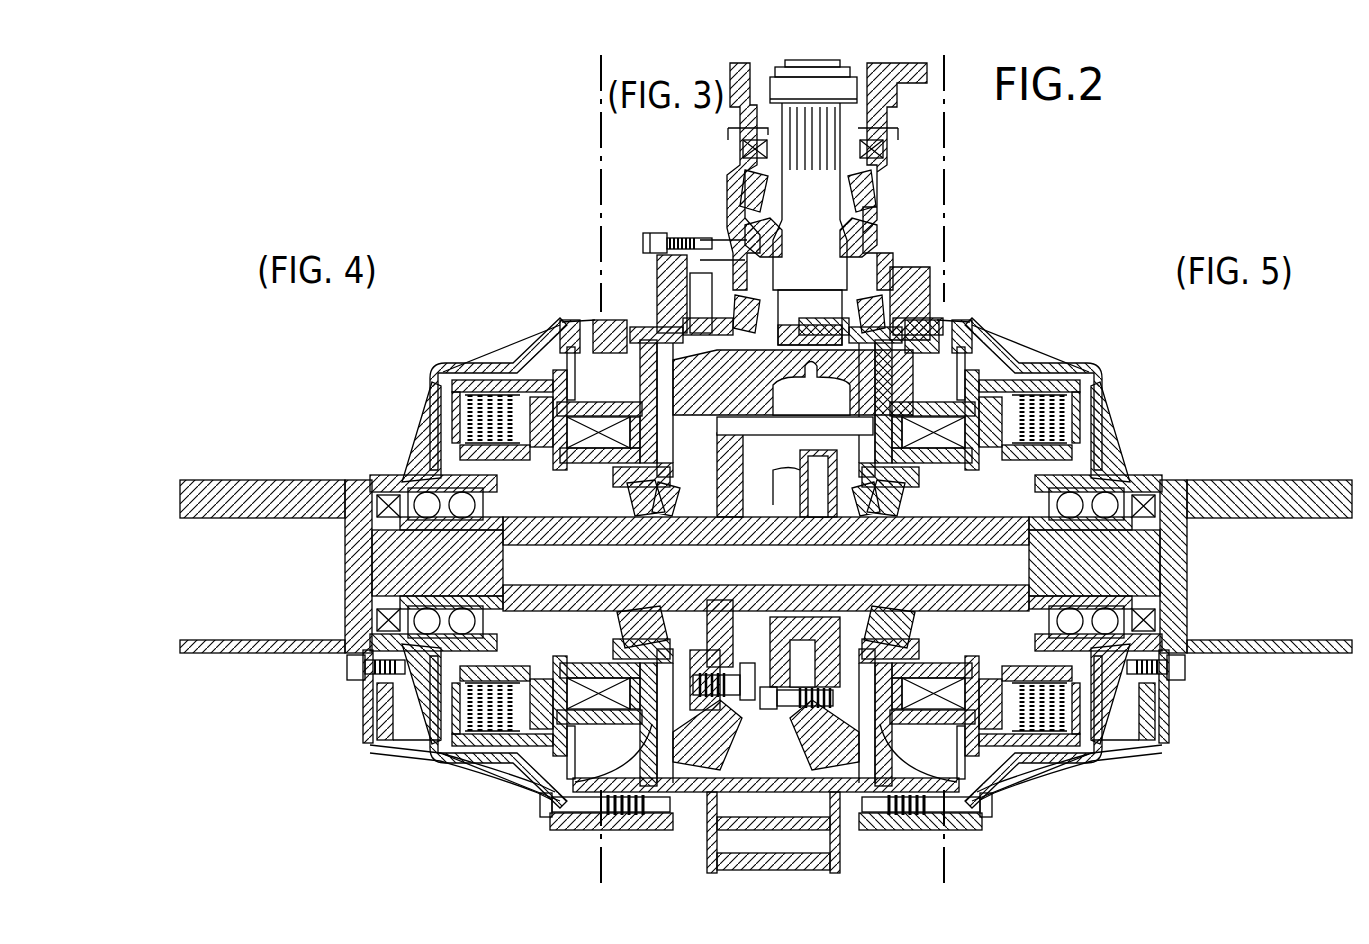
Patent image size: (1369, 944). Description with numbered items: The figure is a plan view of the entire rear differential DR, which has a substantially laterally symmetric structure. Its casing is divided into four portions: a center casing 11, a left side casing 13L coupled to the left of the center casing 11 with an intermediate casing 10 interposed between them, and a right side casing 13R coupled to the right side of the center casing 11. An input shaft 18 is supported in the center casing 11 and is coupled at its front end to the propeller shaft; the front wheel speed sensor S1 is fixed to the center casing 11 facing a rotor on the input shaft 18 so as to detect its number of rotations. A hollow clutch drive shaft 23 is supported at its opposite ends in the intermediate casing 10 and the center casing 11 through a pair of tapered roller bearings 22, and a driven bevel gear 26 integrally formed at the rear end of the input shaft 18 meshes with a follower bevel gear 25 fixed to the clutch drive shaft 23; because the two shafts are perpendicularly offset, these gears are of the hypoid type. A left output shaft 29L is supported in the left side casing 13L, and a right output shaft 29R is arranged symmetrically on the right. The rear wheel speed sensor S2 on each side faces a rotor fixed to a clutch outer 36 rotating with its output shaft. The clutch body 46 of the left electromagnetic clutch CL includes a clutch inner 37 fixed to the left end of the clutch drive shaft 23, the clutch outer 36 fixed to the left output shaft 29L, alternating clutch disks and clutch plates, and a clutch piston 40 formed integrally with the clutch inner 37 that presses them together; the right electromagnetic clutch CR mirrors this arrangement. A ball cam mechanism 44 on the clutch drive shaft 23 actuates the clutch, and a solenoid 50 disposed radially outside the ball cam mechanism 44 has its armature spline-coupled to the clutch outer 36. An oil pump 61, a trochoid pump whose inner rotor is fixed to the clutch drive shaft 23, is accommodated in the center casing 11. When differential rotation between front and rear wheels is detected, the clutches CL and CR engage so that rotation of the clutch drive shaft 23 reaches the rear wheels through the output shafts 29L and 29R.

The intermediate casing 10 is at (593, 318).
The center casing 11 is at (730, 185).
The left side casing 13L is at (533, 345).
The right side casing 13R is at (1008, 340).
The input shaft 18 is at (833, 241).
The tapered roller bearings 22 is at (668, 532).
The clutch drive shaft 23 is at (758, 505).
The follower bevel gear 25 is at (742, 750).
The driven bevel gear 26 is at (840, 418).
The left output shaft 29L is at (357, 527).
The right output shaft 29R is at (1186, 485).
The clutch outer 36 is at (457, 365).
The clutch inner 37 is at (447, 432).
The clutch piston 40 is at (563, 321).
The ball cam mechanism 44 is at (584, 536).
The clutch body 46 is at (480, 381).
The solenoid 50 is at (595, 401).
The oil pump 61 is at (820, 724).
The left electromagnetic clutch CL is at (496, 362).
The right electromagnetic clutch CR is at (1064, 364).
The rear differential DR is at (1016, 258).
The front wheel speed sensor S1 is at (713, 290).
The rear wheel speed sensor S2 is at (410, 750).